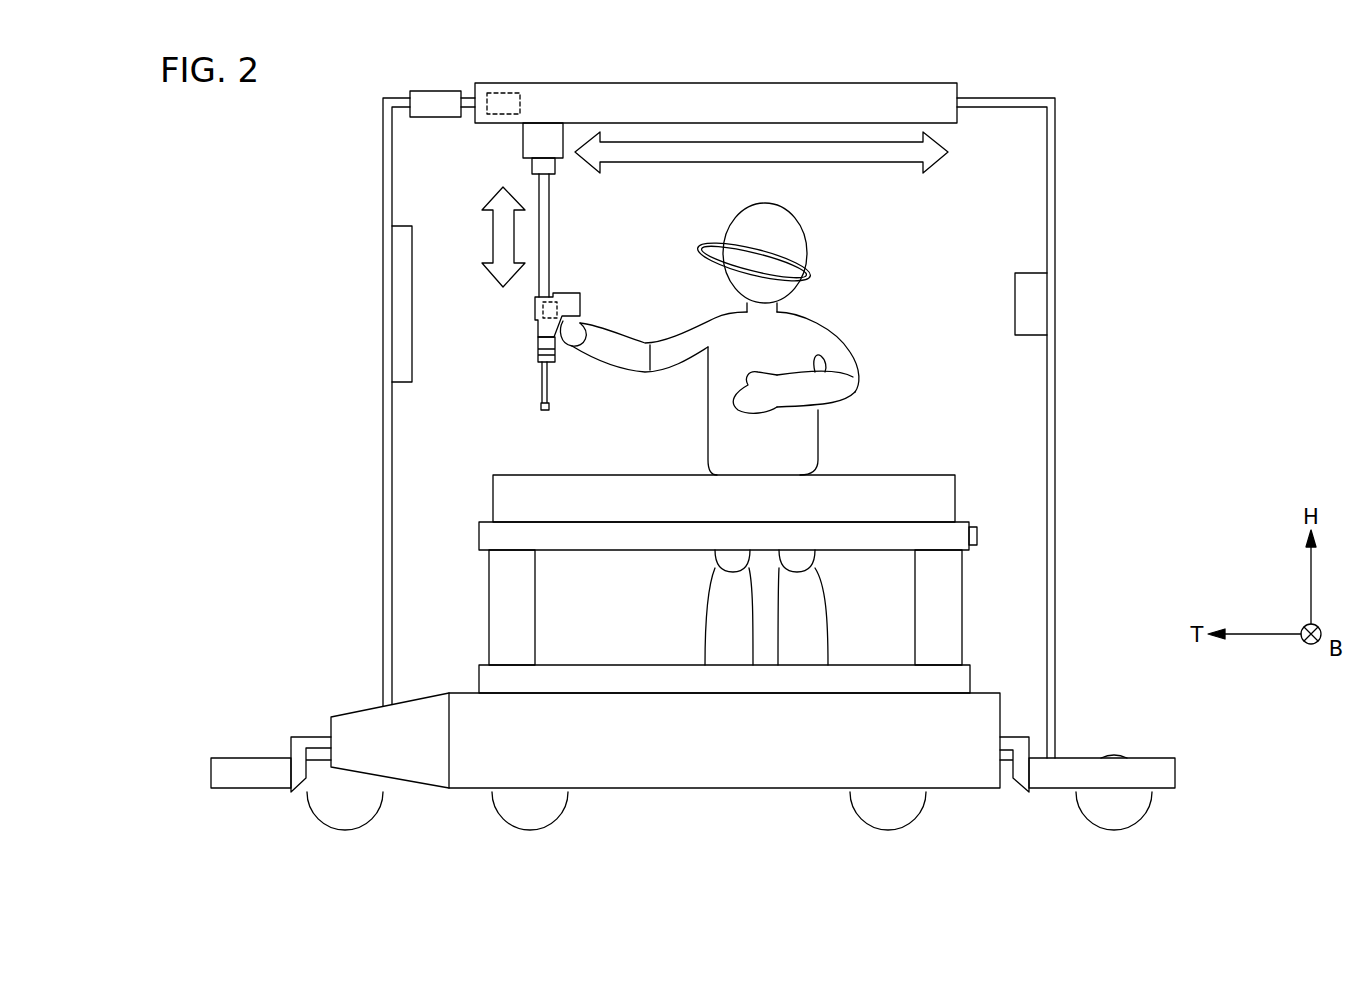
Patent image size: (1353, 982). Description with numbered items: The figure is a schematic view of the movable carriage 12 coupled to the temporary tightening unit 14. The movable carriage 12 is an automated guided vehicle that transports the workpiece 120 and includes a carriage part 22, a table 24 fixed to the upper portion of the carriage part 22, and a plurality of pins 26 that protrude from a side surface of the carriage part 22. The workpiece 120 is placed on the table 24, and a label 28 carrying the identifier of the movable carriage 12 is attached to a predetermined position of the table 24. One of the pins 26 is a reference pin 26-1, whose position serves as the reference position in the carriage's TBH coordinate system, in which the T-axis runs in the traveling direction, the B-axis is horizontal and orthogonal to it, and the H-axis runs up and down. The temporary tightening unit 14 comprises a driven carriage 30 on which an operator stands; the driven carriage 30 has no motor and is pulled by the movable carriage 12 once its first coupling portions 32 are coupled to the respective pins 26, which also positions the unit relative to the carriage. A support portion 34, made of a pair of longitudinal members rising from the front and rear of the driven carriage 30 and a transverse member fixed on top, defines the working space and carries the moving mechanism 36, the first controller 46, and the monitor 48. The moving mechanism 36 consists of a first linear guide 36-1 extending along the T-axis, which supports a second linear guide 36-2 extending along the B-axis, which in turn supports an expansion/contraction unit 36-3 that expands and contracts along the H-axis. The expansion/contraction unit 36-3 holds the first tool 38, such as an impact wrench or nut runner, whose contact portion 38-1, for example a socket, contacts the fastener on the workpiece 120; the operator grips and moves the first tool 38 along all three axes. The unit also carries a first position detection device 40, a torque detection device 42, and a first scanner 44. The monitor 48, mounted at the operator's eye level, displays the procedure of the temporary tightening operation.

The movable carriage 12 is at (694, 758).
The temporary tightening unit 14 is at (734, 404).
The carriage part 22 is at (475, 767).
The table 24 is at (479, 535).
The pins 26 is at (643, 732).
The reference pin 26-1 is at (306, 735).
The label 28 is at (977, 535).
The driven carriage 30 is at (1170, 775).
The first coupling portions 32 is at (291, 752).
The support portion 34 is at (998, 98).
The moving mechanism 36 is at (698, 163).
The first linear guide 36-1 is at (609, 83).
The second linear guide 36-2 is at (523, 142).
The expansion/contraction unit 36-3 is at (532, 166).
The first tool 38 is at (551, 370).
The contact portion 38-1 is at (546, 411).
The first position detection device 40 is at (500, 93).
The torque detection device 42 is at (560, 308).
The first scanner 44 is at (1025, 303).
The first controller 46 is at (438, 91).
The monitor 48 is at (402, 296).
The workpiece 120 is at (890, 475).